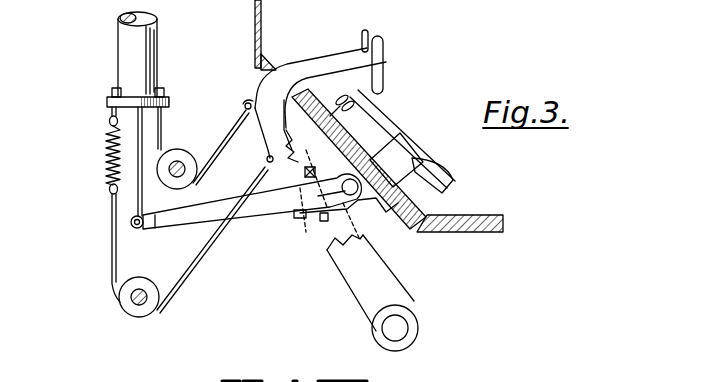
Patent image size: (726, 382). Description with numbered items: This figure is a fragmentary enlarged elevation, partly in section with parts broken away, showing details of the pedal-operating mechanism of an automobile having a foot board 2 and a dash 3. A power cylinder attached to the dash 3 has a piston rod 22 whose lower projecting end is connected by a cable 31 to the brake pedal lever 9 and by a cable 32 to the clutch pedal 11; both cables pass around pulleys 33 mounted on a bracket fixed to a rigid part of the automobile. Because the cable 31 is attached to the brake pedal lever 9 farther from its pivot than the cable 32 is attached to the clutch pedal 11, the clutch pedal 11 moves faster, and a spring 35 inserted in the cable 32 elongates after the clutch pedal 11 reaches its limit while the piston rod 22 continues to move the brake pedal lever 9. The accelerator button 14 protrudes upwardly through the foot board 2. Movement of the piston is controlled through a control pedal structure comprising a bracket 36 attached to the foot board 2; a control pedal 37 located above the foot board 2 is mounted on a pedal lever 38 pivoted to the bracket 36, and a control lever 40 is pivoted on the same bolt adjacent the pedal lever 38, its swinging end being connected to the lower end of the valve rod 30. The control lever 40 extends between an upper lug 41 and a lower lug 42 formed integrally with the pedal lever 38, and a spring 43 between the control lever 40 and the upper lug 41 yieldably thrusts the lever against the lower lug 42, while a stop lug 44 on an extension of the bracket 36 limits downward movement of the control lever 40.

The foot board 2 is at (267, 57).
The dash 3 is at (254, 27).
The brake pedal lever 9 is at (315, 58).
The clutch pedal 11 is at (368, 62).
The accelerator pedal or button 14 is at (356, 97).
The piston rod 22 is at (131, 42).
The valve rod 30 is at (128, 113).
The cable 31 is at (226, 136).
The cable 32 is at (118, 266).
The pulleys 33 is at (174, 156).
The spring 35 is at (106, 141).
The bracket 36 is at (387, 215).
The control pedal 37 is at (403, 139).
The pedal lever 38 is at (387, 145).
The control lever 40 is at (257, 207).
The upper lug 41 is at (316, 184).
The lower lug 42 is at (345, 219).
The spring 43 is at (293, 198).
The stop lug 44 is at (300, 222).